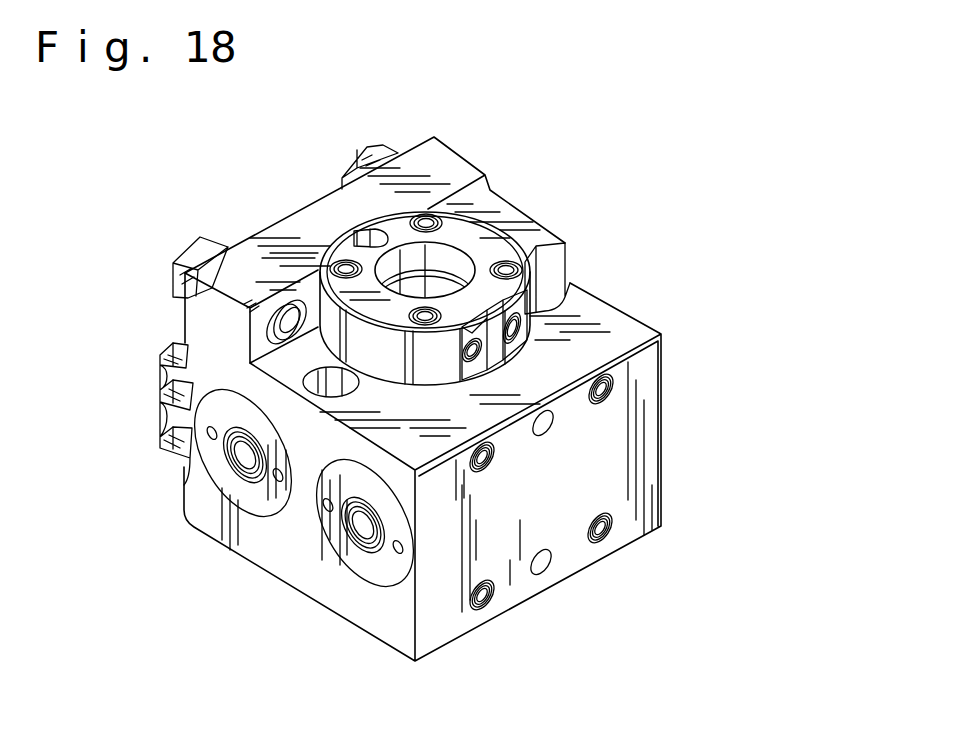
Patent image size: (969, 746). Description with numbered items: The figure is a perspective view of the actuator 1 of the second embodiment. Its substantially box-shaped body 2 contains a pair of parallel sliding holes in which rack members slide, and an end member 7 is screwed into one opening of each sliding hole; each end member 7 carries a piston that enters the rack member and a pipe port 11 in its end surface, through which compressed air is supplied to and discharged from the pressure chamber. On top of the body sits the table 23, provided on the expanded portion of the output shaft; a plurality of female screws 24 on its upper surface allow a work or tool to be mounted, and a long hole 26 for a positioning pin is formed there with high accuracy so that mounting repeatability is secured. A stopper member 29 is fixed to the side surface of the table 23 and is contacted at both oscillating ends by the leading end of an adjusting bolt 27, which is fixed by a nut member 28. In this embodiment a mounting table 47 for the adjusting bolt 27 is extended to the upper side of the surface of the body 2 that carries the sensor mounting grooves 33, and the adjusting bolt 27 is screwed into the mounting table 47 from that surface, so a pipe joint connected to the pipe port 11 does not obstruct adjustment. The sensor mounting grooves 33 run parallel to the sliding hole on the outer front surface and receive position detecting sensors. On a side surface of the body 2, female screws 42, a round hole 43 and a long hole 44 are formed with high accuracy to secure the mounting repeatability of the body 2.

The actuator 1 is at (640, 261).
The body 2 is at (645, 362).
The end member 7 is at (220, 473).
The pipe port 11 is at (252, 462).
The table 23 is at (465, 233).
The female screws 24 is at (333, 266).
The long hole 26 is at (358, 233).
The adjusting bolt 27 is at (300, 332).
The nut member 28 is at (357, 165).
The stopper member 29 is at (500, 220).
The sensor mounting grooves 33 is at (166, 384).
The female screws 42 is at (487, 602).
The round hole 43 is at (547, 437).
The long hole 44 is at (550, 565).
The mounting table 47 is at (441, 165).